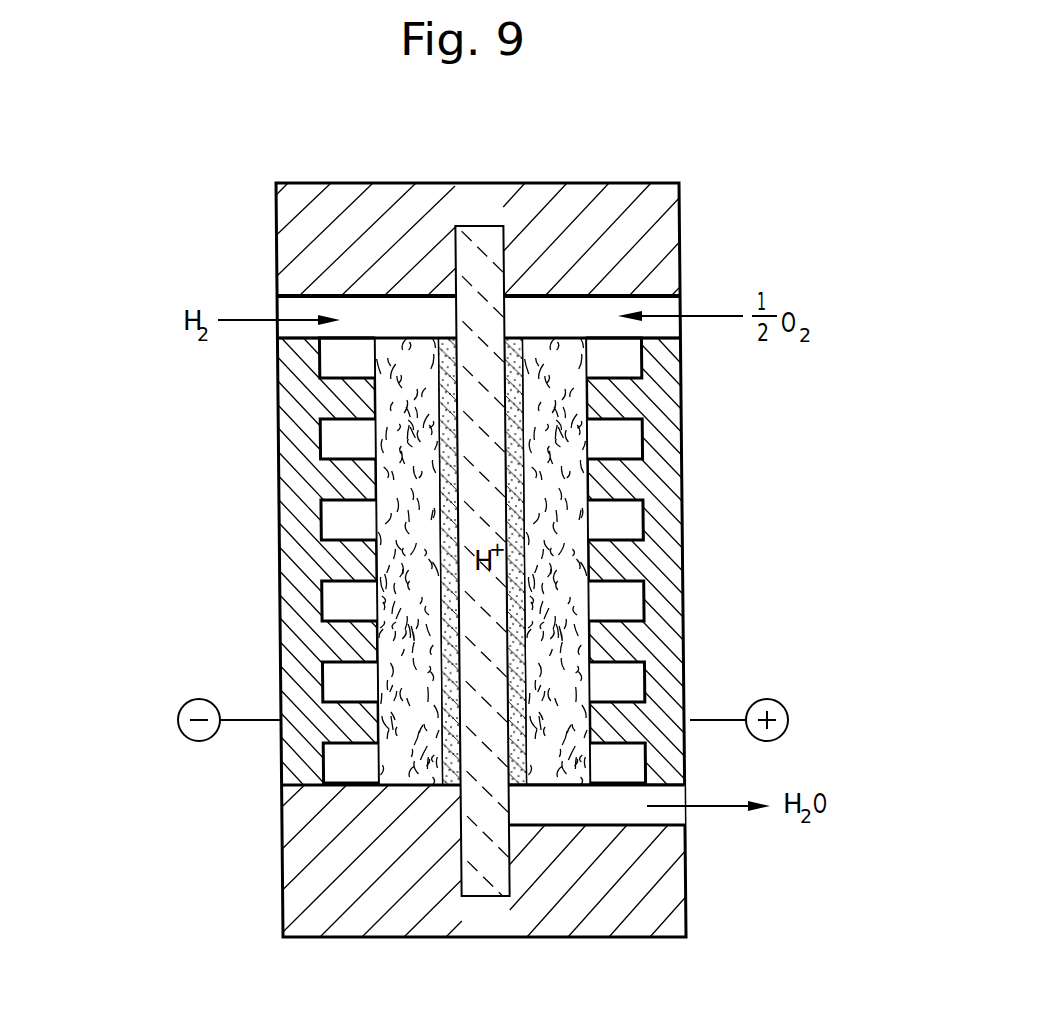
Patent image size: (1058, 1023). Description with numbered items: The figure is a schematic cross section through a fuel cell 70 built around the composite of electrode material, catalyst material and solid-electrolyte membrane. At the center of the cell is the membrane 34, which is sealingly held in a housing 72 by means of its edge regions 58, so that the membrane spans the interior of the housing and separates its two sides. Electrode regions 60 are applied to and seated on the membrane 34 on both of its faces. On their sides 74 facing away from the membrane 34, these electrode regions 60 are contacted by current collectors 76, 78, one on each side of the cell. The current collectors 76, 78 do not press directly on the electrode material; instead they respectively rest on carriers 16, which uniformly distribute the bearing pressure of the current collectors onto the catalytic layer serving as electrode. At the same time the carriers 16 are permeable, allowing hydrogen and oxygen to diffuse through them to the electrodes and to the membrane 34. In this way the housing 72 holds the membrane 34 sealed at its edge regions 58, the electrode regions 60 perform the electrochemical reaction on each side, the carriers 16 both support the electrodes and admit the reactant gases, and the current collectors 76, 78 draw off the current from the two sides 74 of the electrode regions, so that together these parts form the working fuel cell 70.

The fuel cell 70 is at (708, 196).
The housing 72 is at (555, 180).
The edge regions 58 is at (479, 231).
The membrane 34 is at (483, 397).
The electrode regions 60 is at (392, 476).
The carriers 16 is at (402, 520).
The sides facing away from the membrane 74 is at (365, 596).
The current collector 76 is at (300, 623).
The current collector 78 is at (665, 628).